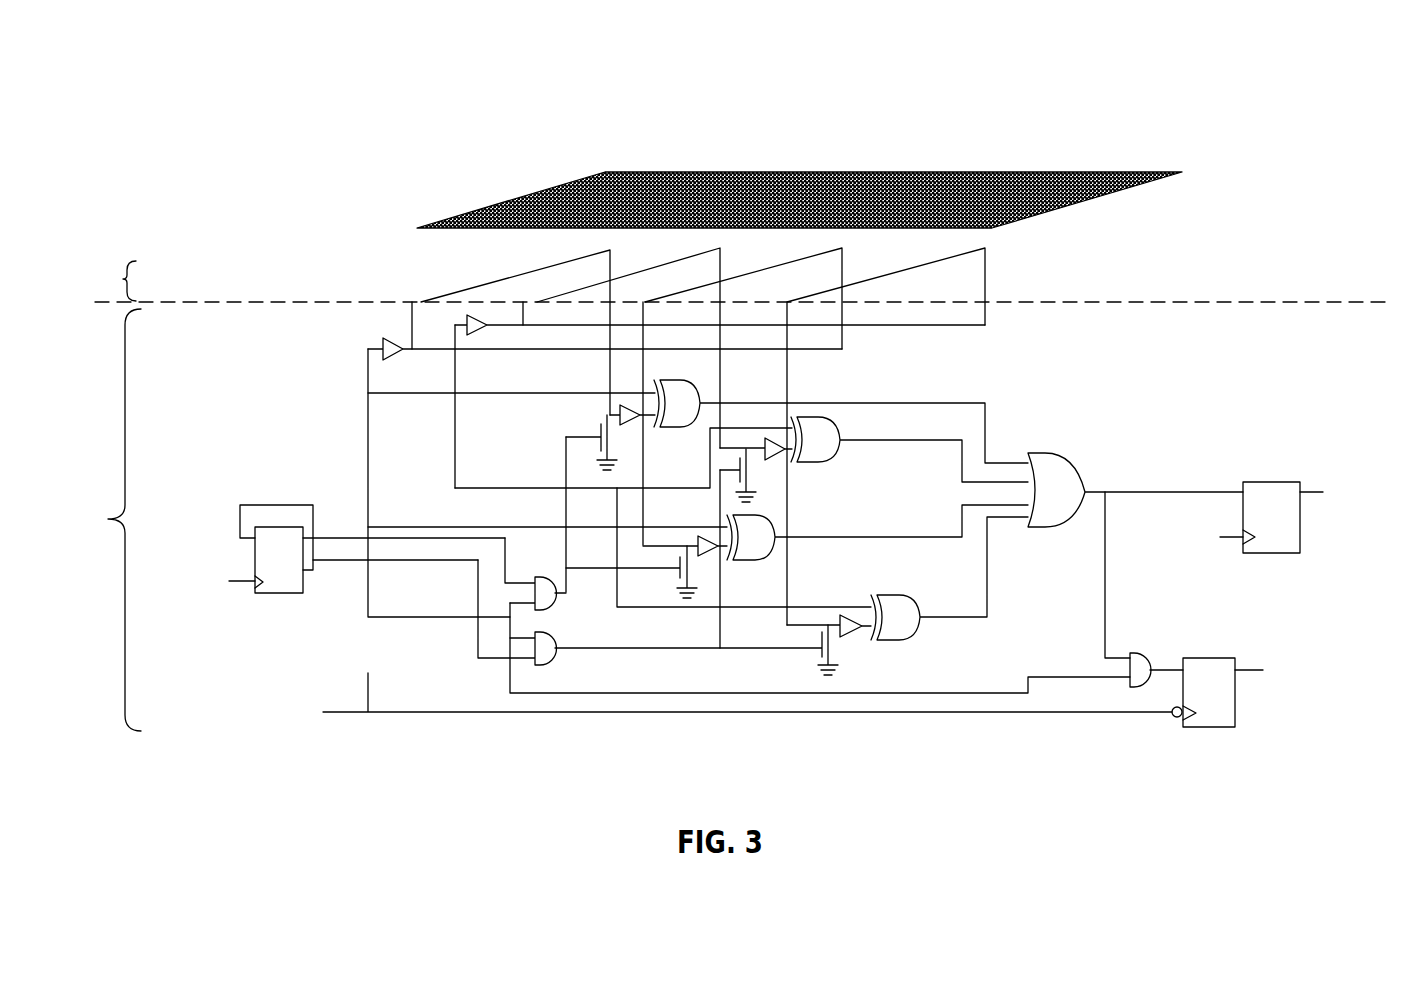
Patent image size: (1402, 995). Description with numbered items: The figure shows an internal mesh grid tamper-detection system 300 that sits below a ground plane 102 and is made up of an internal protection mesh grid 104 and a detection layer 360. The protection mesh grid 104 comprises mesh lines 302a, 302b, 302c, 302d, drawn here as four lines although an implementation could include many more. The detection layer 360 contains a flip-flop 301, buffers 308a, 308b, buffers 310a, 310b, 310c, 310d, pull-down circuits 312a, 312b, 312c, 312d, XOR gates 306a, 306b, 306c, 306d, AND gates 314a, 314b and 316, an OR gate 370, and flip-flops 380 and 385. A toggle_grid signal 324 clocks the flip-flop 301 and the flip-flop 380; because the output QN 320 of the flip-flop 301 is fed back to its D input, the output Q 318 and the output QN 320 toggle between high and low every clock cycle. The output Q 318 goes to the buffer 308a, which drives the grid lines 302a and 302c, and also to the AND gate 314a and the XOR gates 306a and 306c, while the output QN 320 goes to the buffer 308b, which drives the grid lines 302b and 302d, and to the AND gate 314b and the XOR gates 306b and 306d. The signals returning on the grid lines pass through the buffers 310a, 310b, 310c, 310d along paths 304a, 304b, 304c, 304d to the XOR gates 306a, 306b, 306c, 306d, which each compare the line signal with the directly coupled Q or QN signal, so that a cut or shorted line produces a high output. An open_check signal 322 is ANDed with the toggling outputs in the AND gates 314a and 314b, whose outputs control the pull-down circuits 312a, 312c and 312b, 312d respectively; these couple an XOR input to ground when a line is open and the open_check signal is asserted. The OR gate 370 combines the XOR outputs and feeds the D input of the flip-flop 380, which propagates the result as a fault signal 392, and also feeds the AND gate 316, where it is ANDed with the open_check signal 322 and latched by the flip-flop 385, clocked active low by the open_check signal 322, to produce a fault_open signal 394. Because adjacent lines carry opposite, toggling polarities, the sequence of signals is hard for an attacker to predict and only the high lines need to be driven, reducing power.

The internal mesh grid tamper-detection system 300 is at (1373, 72).
The ground plane 102 is at (502, 194).
The internal protection mesh grid 104 is at (739, 281).
The detection layer 360 is at (116, 520).
The mesh line 302a is at (548, 268).
The mesh line 302b is at (672, 268).
The mesh line 302c is at (799, 268).
The mesh line 302d is at (939, 266).
The buffer 308a is at (385, 343).
The buffer 308b is at (480, 316).
The signal line 304a is at (472, 394).
The signal line 304b is at (476, 488).
The signal line 304c is at (487, 527).
The signal line 304d is at (672, 607).
The buffer 310a is at (610, 400).
The buffer 310b is at (782, 436).
The buffer 310c is at (708, 536).
The buffer 310d is at (854, 616).
The pull-down circuit 312a is at (598, 441).
The pull-down circuit 312b is at (752, 484).
The pull-down circuit 312c is at (680, 566).
The pull-down circuit 312d is at (822, 648).
The XOR gate 306a is at (680, 428).
The XOR gate 306b is at (835, 462).
The XOR gate 306c is at (762, 561).
The XOR gate 306d is at (916, 639).
The AND gate 314a is at (540, 560).
The AND gate 314b is at (546, 660).
The AND gate 316 is at (1140, 651).
The OR gate 370 is at (1058, 454).
The flip-flop 301 is at (279, 526).
The output Q 318 is at (336, 535).
The output QN 320 is at (333, 562).
The open_check signal 322 is at (354, 710).
The toggle_grid signal 324 is at (244, 575).
The flip-flop 380 is at (1274, 480).
The flip-flop 385 is at (1211, 658).
The fault signal 392 is at (1310, 497).
The fault_open signal 394 is at (1245, 675).